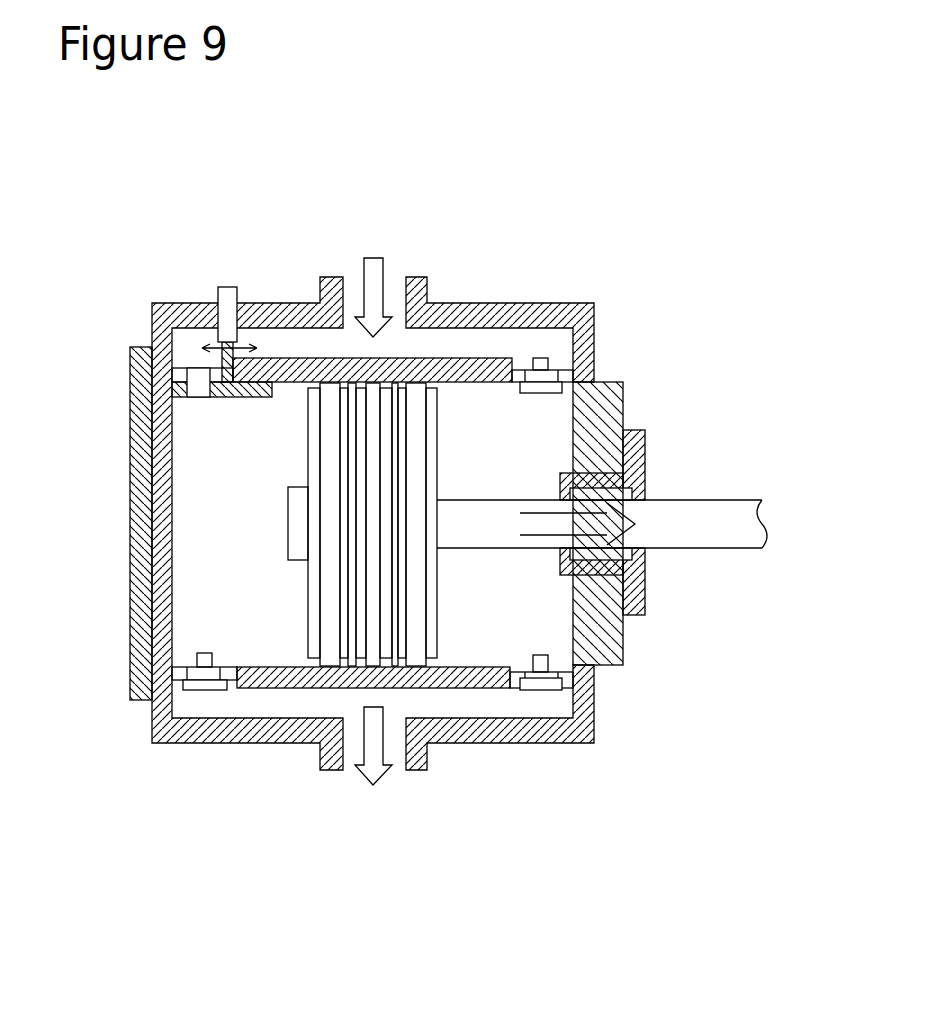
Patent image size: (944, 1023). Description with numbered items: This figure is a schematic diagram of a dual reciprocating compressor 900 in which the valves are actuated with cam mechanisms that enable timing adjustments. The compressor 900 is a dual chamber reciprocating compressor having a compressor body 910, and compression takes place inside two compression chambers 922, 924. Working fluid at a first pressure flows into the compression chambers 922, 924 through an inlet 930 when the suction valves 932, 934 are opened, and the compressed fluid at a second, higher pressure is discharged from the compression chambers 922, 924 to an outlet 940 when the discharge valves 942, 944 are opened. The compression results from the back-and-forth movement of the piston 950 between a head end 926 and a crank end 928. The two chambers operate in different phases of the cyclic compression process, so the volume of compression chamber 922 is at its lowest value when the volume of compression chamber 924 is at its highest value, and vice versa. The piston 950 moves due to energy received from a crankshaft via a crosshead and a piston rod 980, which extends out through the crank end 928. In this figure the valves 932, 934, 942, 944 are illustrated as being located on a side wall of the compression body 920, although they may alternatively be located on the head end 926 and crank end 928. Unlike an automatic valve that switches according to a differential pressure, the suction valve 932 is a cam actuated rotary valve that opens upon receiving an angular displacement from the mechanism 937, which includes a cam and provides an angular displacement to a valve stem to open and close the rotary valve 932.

The dual reciprocating compressor 900 is at (632, 245).
The compressor body 910 is at (608, 667).
The compression body 920 is at (455, 678).
The compression chamber 922 is at (173, 588).
The compression chamber 924 is at (540, 628).
The head end 926 is at (140, 507).
The crank end 928 is at (600, 418).
The inlet 930 is at (377, 270).
The suction valve 932 is at (173, 383).
The suction valve 934 is at (555, 383).
The mechanism 937 is at (218, 288).
The outlet 940 is at (373, 768).
The discharge valve 942 is at (200, 683).
The discharge valve 944 is at (542, 685).
The piston 950 is at (327, 650).
The piston rod 980 is at (690, 513).